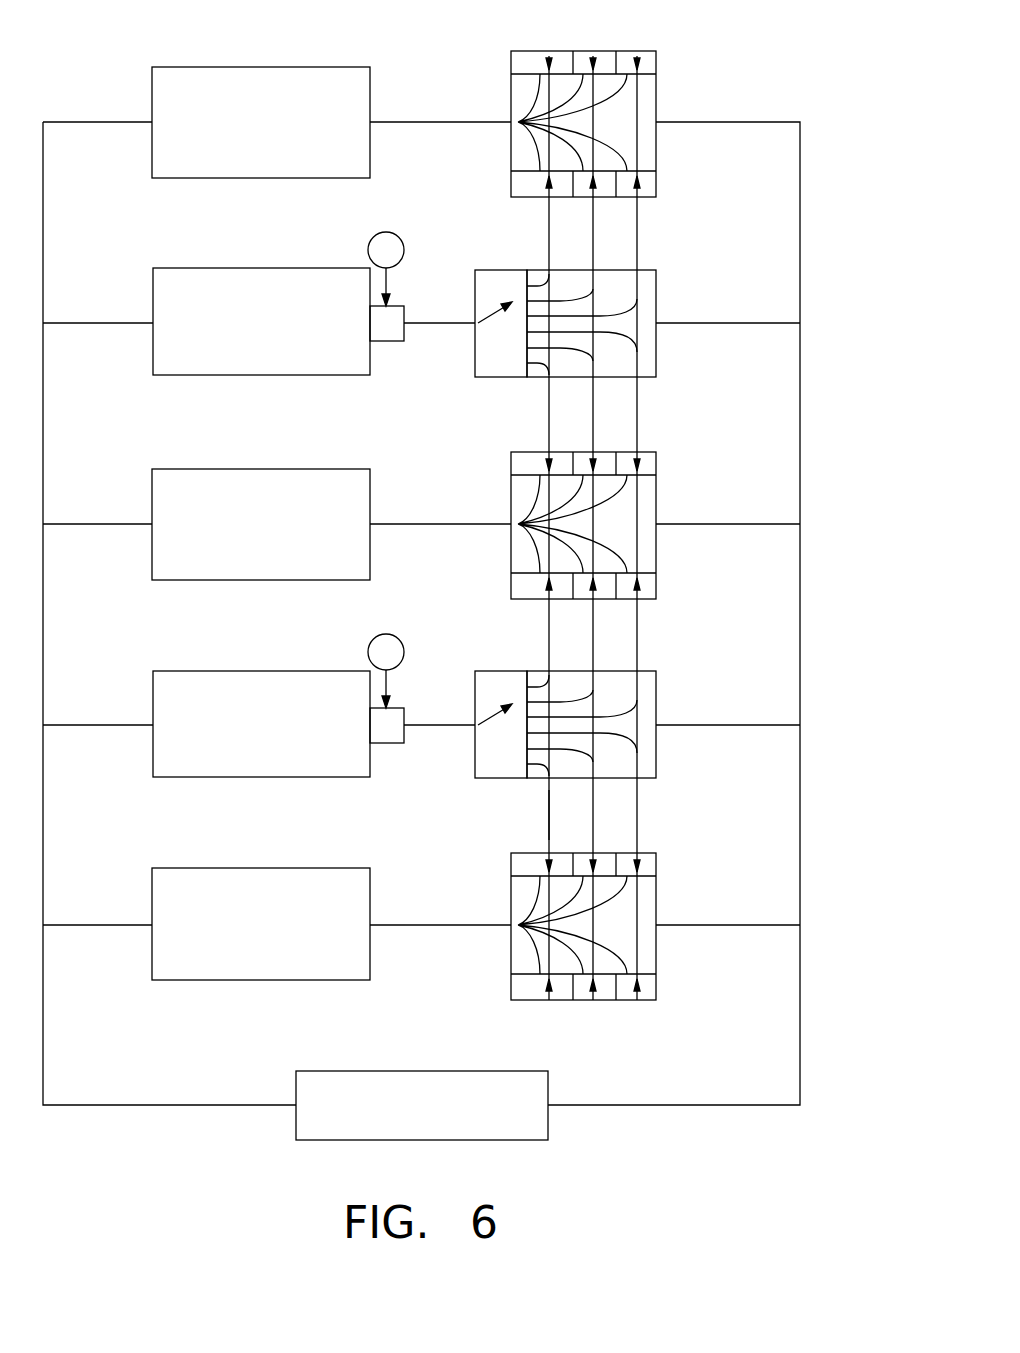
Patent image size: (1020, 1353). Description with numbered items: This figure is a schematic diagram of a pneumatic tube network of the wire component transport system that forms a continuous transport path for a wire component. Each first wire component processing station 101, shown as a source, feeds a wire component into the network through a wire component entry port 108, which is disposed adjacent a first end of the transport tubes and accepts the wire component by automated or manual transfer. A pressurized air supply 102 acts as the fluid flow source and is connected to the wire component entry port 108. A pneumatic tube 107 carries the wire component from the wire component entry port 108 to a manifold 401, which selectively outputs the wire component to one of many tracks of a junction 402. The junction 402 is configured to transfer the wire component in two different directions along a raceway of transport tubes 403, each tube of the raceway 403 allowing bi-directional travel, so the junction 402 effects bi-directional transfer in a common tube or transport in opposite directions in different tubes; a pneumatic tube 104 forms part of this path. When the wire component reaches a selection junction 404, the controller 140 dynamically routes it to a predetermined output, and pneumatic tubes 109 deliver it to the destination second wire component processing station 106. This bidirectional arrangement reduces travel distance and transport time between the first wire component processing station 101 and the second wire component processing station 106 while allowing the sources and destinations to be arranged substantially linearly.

The first wire component processing station 101 is at (230, 376).
The pressurized air supply 102 is at (396, 233).
The pneumatic tube 104 is at (548, 806).
The second wire component processing station 106 is at (259, 179).
The pneumatic tube 107 is at (449, 324).
The wire component entry port 108 is at (383, 342).
The pneumatic tubes 109 is at (393, 525).
The controller 140 is at (361, 1071).
The manifold 401 is at (510, 270).
The junction 402 is at (656, 345).
The raceway of transport tubes 403 is at (638, 232).
The selection junction 404 is at (657, 75).